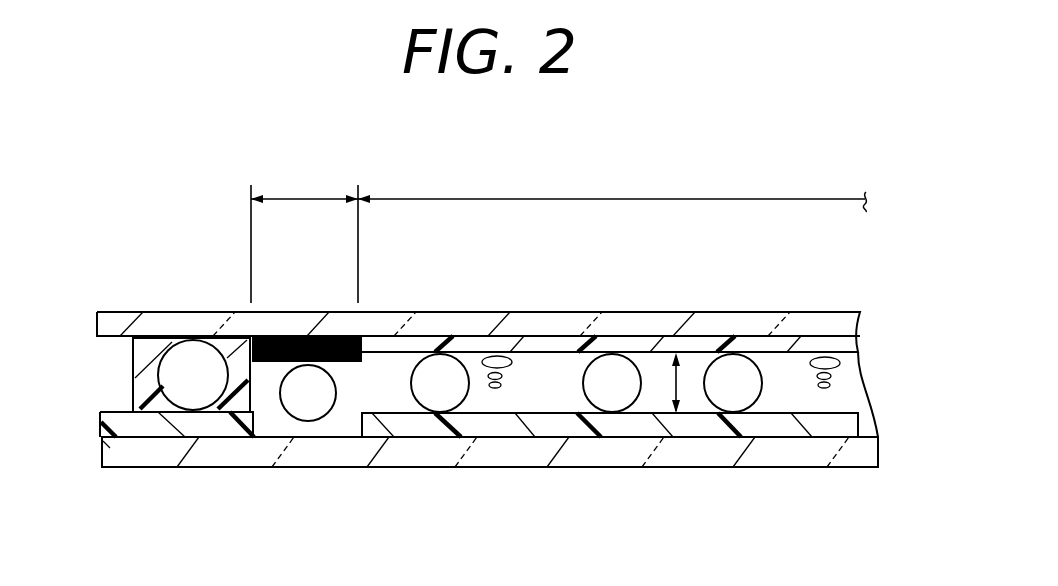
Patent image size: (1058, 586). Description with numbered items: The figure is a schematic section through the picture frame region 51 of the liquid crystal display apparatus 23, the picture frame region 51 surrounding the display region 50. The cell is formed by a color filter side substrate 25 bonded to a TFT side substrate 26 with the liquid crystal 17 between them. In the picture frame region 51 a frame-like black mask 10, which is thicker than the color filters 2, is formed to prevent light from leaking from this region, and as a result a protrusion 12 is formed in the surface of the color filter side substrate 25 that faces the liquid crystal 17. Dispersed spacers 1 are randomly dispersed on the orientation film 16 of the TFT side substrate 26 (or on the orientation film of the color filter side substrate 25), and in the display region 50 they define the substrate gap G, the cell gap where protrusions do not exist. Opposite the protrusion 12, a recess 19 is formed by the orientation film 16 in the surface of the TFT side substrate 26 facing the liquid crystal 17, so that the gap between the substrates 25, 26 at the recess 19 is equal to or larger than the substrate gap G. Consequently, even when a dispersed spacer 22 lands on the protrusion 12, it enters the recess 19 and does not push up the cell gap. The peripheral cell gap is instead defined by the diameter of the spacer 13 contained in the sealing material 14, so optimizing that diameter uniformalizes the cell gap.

The dispersed spacers 1 is at (452, 392).
The color filters 2 is at (665, 341).
The black mask 10 is at (318, 352).
The protrusion 12 is at (273, 375).
The spacer 13 is at (198, 370).
The sealing material 14 is at (145, 392).
The orientation film 16 is at (613, 428).
The liquid crystal 17 is at (550, 380).
The recess 19 is at (347, 417).
The dispersed spacer 22 is at (310, 412).
The liquid crystal display apparatus 23 is at (186, 246).
The color filter side substrate 25 is at (884, 308).
The TFT side substrate 26 is at (884, 405).
The display region 50 is at (585, 198).
The picture frame region 51 is at (307, 198).
The substrate gap G is at (678, 387).